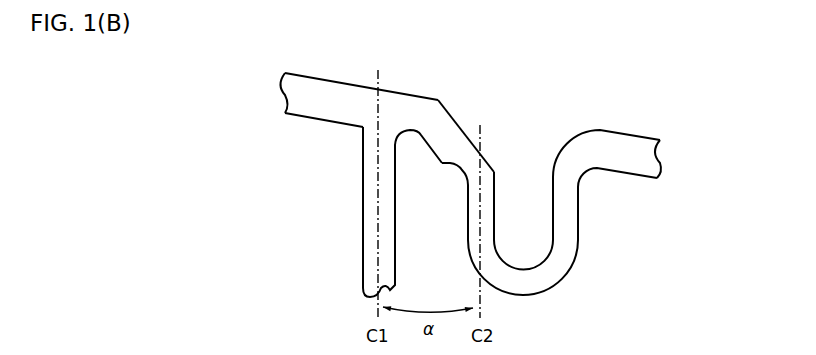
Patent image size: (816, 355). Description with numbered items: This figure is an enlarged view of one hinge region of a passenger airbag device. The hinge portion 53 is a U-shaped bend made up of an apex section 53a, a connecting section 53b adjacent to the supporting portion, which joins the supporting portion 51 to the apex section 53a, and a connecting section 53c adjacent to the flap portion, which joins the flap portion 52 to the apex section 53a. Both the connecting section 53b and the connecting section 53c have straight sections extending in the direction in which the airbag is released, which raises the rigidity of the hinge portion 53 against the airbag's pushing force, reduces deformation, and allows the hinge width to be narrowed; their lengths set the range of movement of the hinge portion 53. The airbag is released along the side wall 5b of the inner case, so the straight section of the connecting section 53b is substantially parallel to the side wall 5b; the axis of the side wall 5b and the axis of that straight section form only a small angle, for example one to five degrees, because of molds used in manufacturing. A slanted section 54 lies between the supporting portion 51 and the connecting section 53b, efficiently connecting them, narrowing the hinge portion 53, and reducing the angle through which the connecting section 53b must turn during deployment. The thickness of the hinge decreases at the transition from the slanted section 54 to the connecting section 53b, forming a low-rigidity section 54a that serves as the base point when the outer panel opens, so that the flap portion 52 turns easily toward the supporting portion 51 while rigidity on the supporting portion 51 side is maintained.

The supporting portion 51 is at (317, 90).
The flap portion 52 is at (633, 137).
The hinge portion 53 is at (549, 197).
The slanted section 54 is at (455, 130).
The side wall 5b is at (370, 208).
The low-rigidity section 54a is at (455, 177).
The connecting section adjacent to the supporting portion 53b is at (470, 213).
The connecting section adjacent to the flap portion 53c is at (568, 205).
The apex section 53a is at (527, 287).